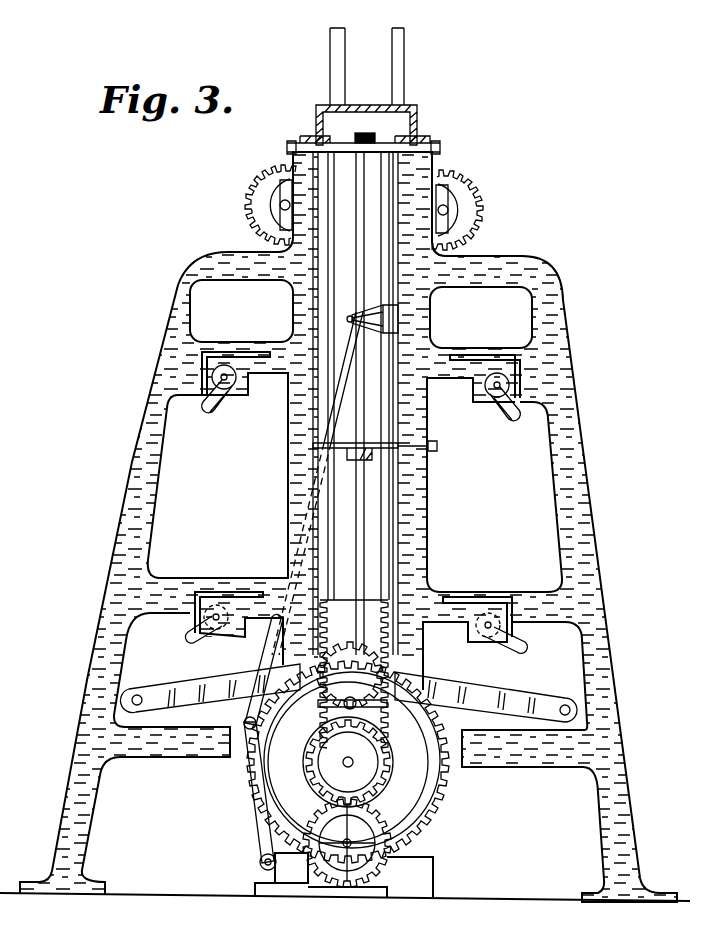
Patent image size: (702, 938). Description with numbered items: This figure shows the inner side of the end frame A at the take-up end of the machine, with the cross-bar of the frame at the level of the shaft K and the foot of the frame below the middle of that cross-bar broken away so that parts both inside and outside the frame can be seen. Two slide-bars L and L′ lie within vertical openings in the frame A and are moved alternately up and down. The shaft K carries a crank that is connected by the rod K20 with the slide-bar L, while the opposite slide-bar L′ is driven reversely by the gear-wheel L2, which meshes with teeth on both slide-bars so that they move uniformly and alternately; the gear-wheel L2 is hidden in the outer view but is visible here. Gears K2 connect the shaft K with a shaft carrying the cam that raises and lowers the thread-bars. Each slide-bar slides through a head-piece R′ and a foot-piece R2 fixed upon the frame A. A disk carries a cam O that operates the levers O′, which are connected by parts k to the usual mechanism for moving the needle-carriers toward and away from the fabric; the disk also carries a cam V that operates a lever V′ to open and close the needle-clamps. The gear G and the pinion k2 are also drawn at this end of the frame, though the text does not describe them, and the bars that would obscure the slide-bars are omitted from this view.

The end frame A is at (437, 878).
The slide-bar L is at (337, 43).
The opposite slide-bar L′ is at (397, 43).
The gear-wheel L2 is at (354, 674).
The head-piece R′ is at (440, 147).
The foot-piece R2 is at (437, 446).
The gear wheel G is at (480, 208).
The connecting parts k is at (208, 402).
The shaft K is at (305, 783).
The gears K2 is at (402, 847).
The rod K20 is at (292, 668).
The pinion k2 is at (299, 845).
The cam O is at (363, 762).
The levers O′ is at (163, 693).
The cam V is at (432, 778).
The lever V′ is at (262, 828).